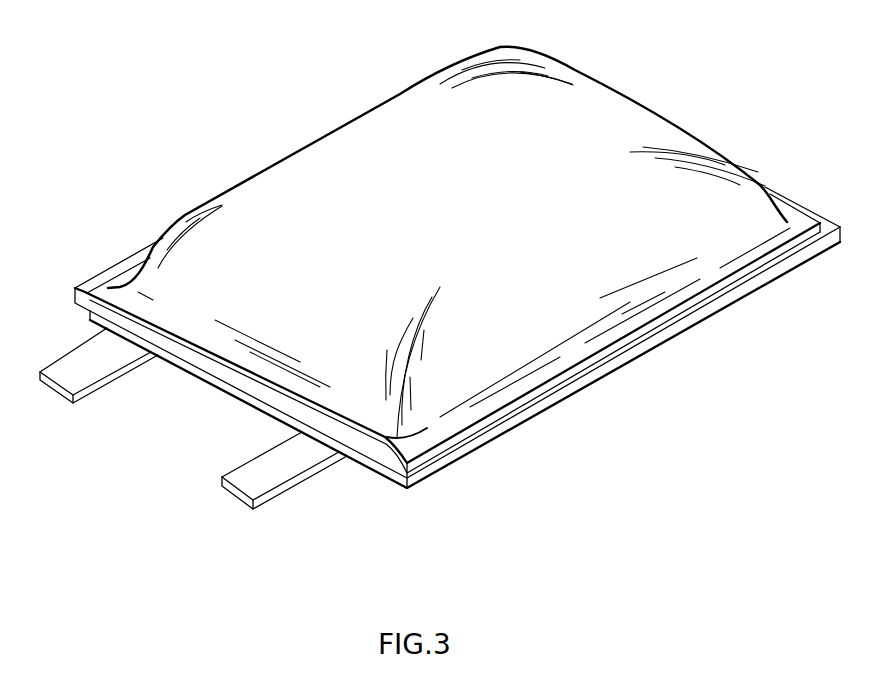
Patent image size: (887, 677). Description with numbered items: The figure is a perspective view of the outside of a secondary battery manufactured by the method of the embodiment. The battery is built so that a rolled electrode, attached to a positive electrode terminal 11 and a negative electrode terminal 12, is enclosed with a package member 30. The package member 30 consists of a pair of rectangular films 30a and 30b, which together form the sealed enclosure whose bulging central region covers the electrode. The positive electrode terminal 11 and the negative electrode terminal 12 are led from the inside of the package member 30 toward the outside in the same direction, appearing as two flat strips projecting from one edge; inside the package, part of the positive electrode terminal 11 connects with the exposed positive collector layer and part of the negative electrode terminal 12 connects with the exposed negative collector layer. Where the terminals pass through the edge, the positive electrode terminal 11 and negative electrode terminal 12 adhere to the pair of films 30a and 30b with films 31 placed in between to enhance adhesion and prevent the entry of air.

The positive electrode terminal 11 is at (72, 372).
The negative electrode terminal 12 is at (245, 475).
The package member 30 is at (648, 431).
The rectangular film 30a is at (507, 407).
The rectangular film 30b is at (573, 387).
The film for enhancing adhesion 31 is at (180, 372).